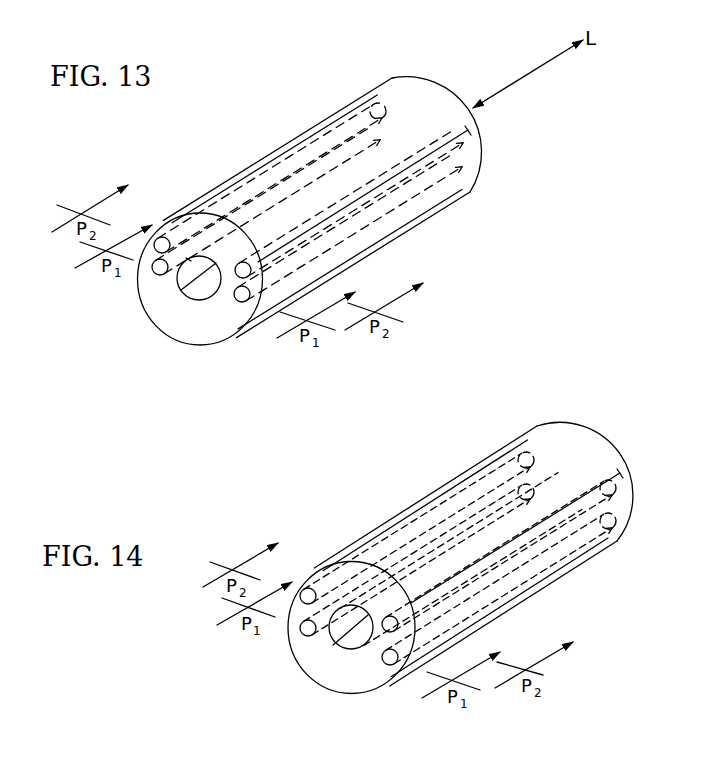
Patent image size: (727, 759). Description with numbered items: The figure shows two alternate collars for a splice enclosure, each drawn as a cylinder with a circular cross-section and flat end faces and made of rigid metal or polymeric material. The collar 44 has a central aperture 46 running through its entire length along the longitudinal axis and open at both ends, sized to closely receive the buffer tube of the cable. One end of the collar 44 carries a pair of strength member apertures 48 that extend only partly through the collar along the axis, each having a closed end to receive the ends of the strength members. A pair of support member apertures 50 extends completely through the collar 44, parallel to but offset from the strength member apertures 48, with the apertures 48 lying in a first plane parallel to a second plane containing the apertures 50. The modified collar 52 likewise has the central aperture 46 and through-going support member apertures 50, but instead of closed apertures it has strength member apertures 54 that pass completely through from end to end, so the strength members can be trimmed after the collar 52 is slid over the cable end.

In FIG. 13, the collar 44 is at (460, 208).
In FIG. 13, the central aperture 46 is at (197, 296).
In FIG. 14, the central aperture 46 is at (348, 643).
In FIG. 13, the strength member apertures 48 is at (155, 262).
In FIG. 13, the support member apertures 50 is at (240, 270).
In FIG. 14, the support member apertures 50 is at (383, 620).
In FIG. 14, the collar 52 is at (600, 420).
In FIG. 14, the strength member apertures 54 is at (305, 633).